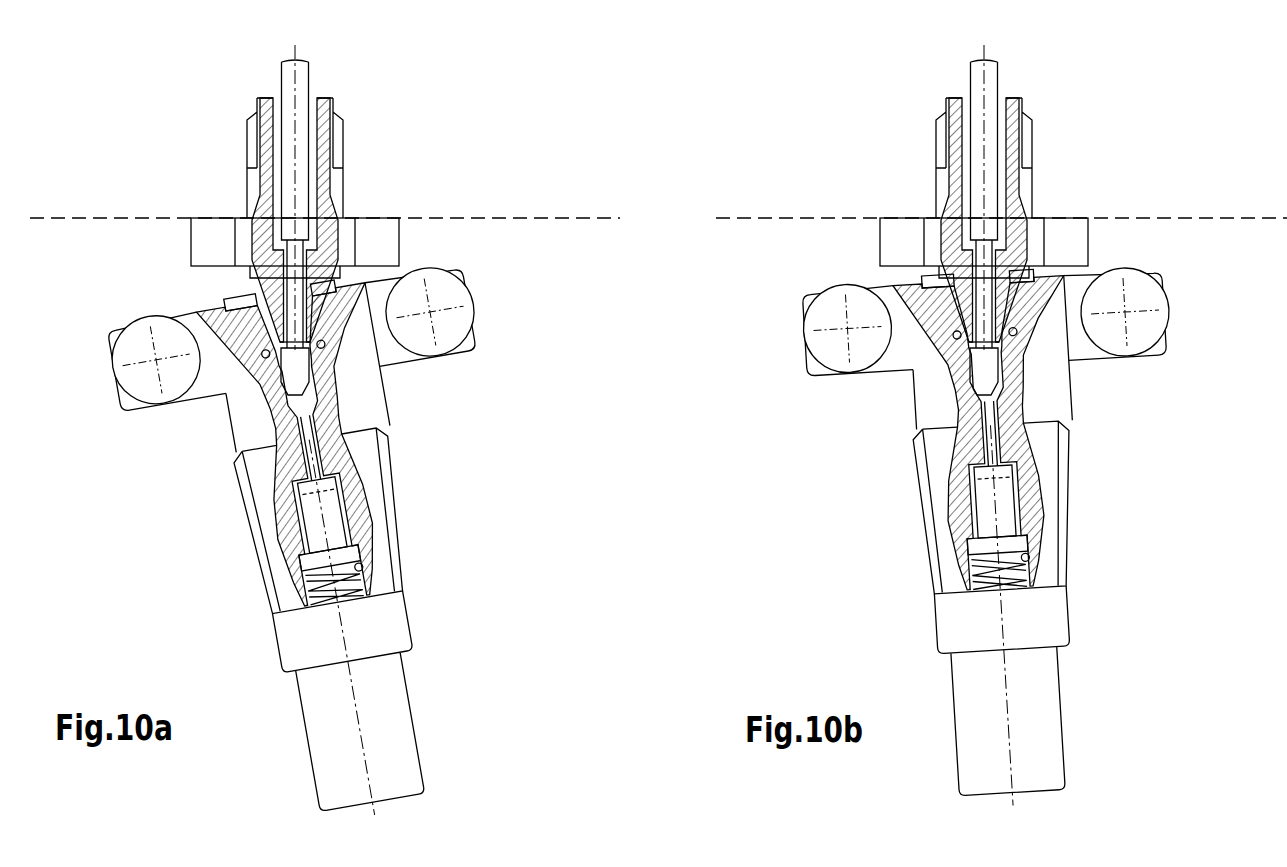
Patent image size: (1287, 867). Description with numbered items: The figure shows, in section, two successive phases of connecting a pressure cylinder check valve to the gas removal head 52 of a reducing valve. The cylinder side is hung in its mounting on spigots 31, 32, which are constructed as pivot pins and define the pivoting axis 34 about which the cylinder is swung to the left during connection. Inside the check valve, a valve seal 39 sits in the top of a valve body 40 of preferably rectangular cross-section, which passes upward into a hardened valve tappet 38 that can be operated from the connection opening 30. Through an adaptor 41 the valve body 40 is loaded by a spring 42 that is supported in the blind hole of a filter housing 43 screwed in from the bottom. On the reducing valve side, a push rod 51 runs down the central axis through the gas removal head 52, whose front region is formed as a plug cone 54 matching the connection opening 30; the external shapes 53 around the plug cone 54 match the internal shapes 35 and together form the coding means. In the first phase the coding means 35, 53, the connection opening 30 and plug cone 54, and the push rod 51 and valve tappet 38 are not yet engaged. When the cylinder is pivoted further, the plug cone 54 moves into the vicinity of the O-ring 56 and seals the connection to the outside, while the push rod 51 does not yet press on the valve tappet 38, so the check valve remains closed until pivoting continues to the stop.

In FIG. 10A, the connection opening 30 is at (263, 337).
In FIG. 10A, the spigot 31 is at (140, 385).
In FIG. 10B, the spigot 31 is at (827, 347).
In FIG. 10A, the spigot 32 is at (450, 290).
In FIG. 10B, the spigot 32 is at (1142, 293).
In FIG. 10A, the pivoting axis 34 is at (455, 318).
In FIG. 10B, the pivoting axis 34 is at (1120, 318).
In FIG. 10A, the coding means (internal shapes) 35 is at (243, 302).
In FIG. 10B, the coding means (internal shapes) 35 is at (915, 275).
In FIG. 10A, the valve tappet 38 is at (263, 480).
In FIG. 10B, the valve tappet 38 is at (947, 462).
In FIG. 10A, the valve seal 39 is at (327, 488).
In FIG. 10B, the valve seal 39 is at (1003, 475).
In FIG. 10A, the valve body 40 is at (313, 520).
In FIG. 10B, the valve body 40 is at (985, 508).
In FIG. 10A, the adaptor 41 is at (367, 547).
In FIG. 10B, the adaptor 41 is at (1022, 547).
In FIG. 10A, the spring 42 is at (290, 600).
In FIG. 10B, the spring 42 is at (983, 565).
In FIG. 10A, the filter housing 43 is at (403, 743).
In FIG. 10B, the filter housing 43 is at (1053, 727).
In FIG. 10A, the push rod 51 is at (290, 76).
In FIG. 10B, the push rod 51 is at (978, 77).
In FIG. 10A, the gas removal head 52 is at (377, 237).
In FIG. 10B, the gas removal head 52 is at (1065, 237).
In FIG. 10A, the external shapes 53 is at (242, 260).
In FIG. 10B, the external shapes 53 is at (930, 260).
In FIG. 10A, the plug cone 54 is at (162, 312).
In FIG. 10B, the plug cone 54 is at (905, 280).
In FIG. 10A, the O-ring 56 is at (322, 347).
In FIG. 10B, the O-ring 56 is at (1010, 333).